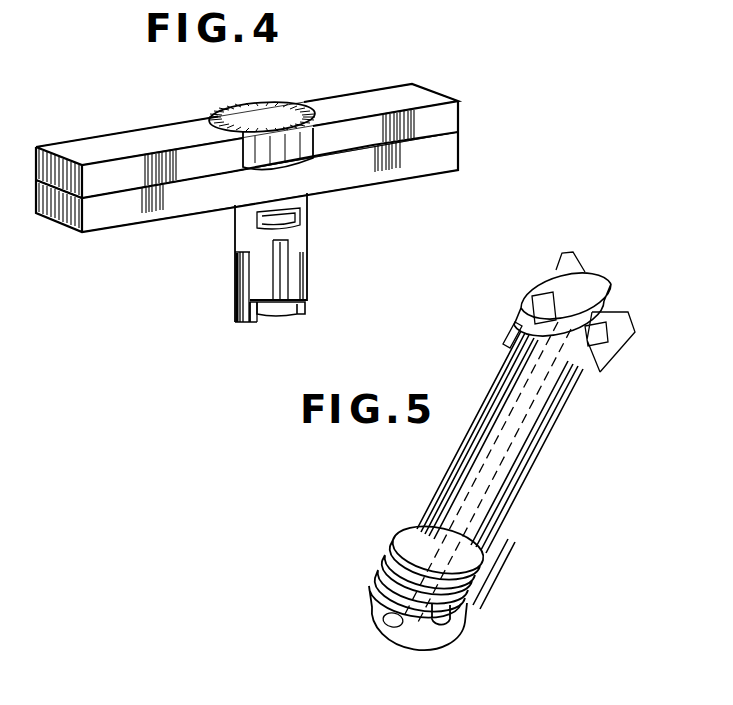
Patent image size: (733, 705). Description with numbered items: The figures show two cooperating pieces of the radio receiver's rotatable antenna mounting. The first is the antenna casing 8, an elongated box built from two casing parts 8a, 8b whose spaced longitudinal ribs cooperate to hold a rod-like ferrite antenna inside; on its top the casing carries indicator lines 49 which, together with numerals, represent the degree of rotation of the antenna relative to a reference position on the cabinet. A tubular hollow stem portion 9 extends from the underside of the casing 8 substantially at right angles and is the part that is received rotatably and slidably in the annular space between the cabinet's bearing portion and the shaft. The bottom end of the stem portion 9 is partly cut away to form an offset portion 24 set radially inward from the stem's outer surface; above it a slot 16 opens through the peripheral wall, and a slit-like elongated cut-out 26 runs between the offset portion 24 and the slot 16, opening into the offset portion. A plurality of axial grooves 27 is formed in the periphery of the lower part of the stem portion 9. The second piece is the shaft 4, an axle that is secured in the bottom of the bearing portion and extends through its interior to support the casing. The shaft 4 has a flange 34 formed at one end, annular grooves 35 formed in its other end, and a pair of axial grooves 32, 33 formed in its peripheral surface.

In FIG. 4, the antenna casing 8 is at (189, 134).
In FIG. 4, the casing part 8a is at (127, 213).
In FIG. 4, the casing part 8b is at (72, 148).
In FIG. 4, the lines 49 is at (308, 142).
In FIG. 4, the stem portion 9 is at (243, 231).
In FIG. 4, the slot 16 is at (290, 213).
In FIG. 4, the cut-out 26 is at (281, 273).
In FIG. 4, the axial grooves 27 is at (233, 292).
In FIG. 4, the offset portion 24 is at (258, 315).
In FIG. 5, the shaft 4 is at (445, 478).
In FIG. 5, the flange 34 is at (597, 292).
In FIG. 5, the annular grooves 35 is at (392, 563).
In FIG. 5, the axial groove 32 is at (385, 617).
In FIG. 5, the axial groove 33 is at (442, 630).